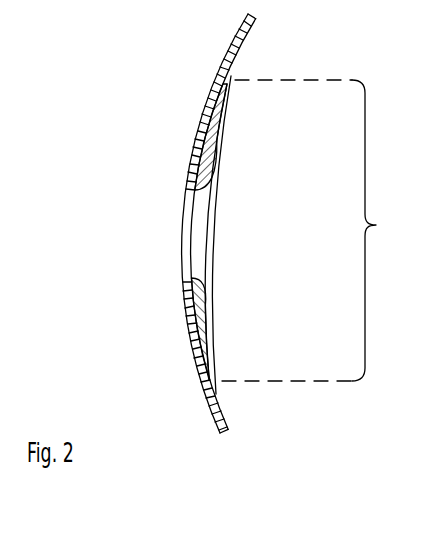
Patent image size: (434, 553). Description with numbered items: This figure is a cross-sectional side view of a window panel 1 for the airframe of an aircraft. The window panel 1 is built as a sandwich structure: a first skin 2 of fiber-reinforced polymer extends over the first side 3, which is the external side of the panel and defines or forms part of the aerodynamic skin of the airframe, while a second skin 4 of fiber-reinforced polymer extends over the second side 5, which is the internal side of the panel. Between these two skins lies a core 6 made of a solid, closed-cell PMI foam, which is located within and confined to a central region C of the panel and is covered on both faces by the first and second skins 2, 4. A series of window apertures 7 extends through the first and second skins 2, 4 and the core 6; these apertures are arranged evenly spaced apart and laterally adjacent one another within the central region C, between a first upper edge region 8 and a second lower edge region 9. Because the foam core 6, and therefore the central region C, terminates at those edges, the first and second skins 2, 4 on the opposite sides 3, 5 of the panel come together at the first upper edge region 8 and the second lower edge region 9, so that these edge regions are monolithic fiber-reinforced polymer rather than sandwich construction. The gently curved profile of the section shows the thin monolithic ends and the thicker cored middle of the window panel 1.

The window panel 1 is at (108, 155).
The first skin 2 is at (210, 388).
The first side 3 is at (173, 354).
The second skin 4 is at (222, 139).
The second side 5 is at (243, 169).
The core 6 is at (205, 146).
The window apertures 7 is at (181, 242).
The first upper edge region 8 is at (276, 29).
The second lower edge region 9 is at (246, 411).
The central region C is at (308, 230).